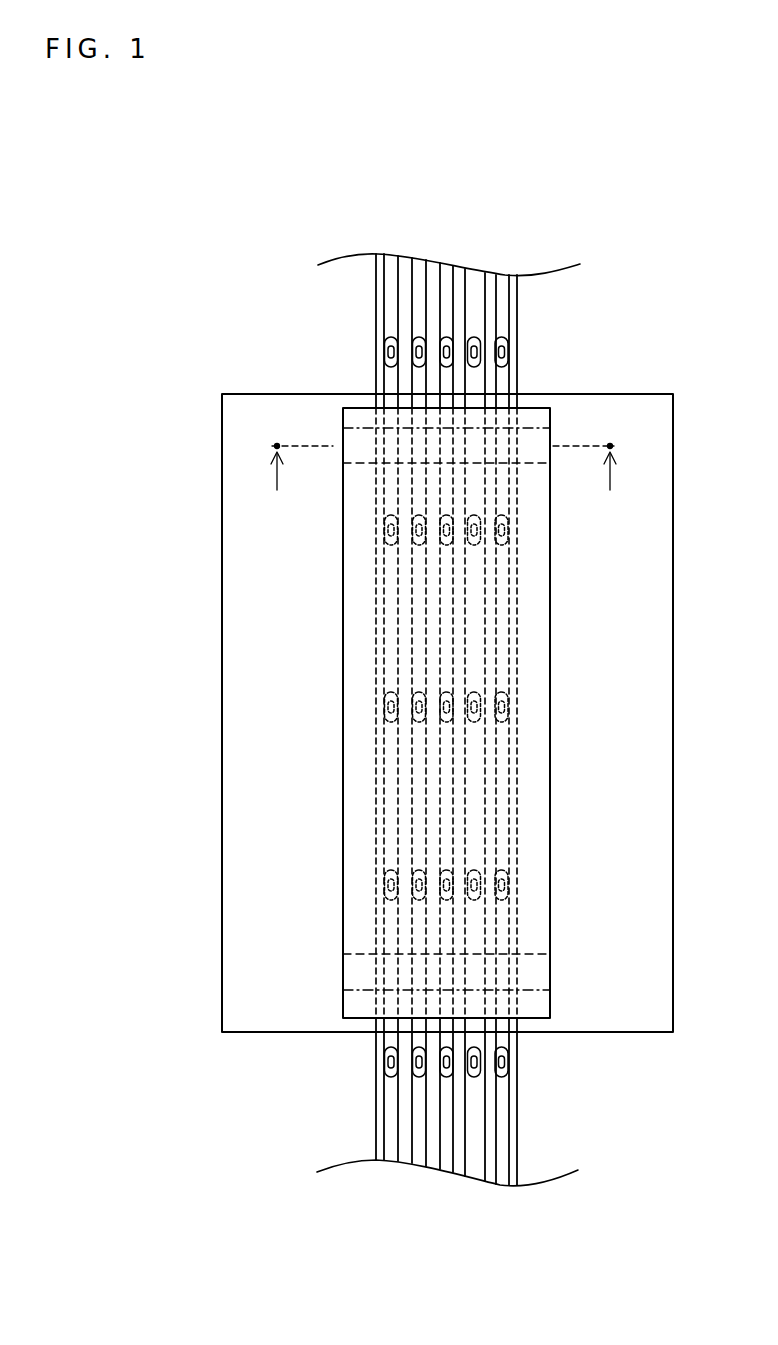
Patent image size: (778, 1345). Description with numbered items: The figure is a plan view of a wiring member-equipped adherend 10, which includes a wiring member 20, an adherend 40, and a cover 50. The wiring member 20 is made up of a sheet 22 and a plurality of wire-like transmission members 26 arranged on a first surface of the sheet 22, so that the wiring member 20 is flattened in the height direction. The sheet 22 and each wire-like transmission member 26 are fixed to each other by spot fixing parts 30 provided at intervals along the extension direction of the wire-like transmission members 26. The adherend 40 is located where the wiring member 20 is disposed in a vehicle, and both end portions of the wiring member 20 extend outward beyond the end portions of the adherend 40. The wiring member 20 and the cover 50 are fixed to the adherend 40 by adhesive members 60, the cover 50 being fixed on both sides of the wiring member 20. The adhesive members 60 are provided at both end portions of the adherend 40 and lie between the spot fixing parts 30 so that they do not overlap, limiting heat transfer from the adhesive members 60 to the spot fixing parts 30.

The wiring member-equipped adherend 10 is at (228, 249).
The wiring member 20 is at (360, 310).
The sheet 22 is at (518, 1090).
The wire-like transmission member 26 is at (413, 1118).
The spot fixing part 30 is at (476, 337).
The adherend 40 is at (240, 613).
The cover 50 is at (537, 698).
The adhesive member 60 is at (367, 463).